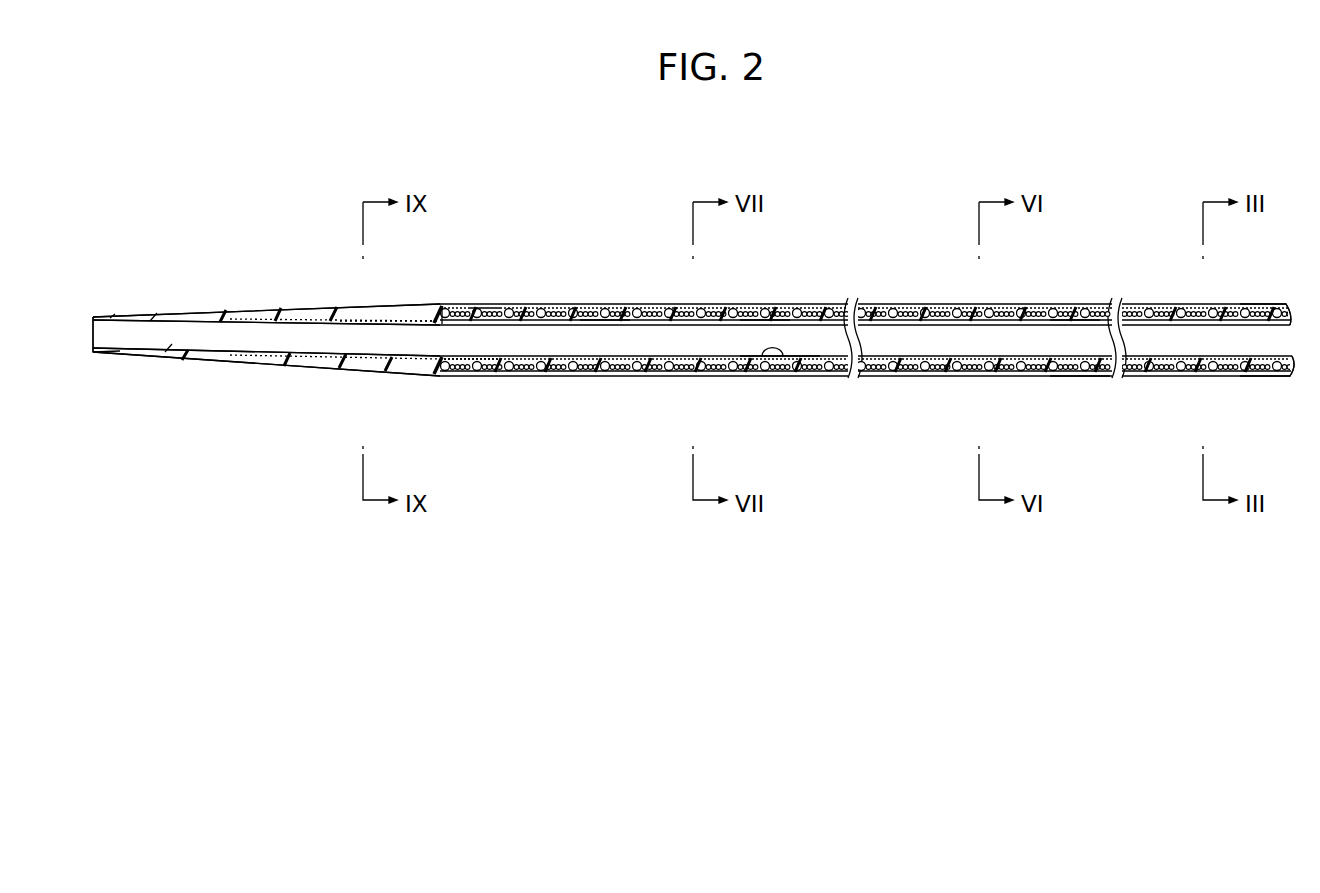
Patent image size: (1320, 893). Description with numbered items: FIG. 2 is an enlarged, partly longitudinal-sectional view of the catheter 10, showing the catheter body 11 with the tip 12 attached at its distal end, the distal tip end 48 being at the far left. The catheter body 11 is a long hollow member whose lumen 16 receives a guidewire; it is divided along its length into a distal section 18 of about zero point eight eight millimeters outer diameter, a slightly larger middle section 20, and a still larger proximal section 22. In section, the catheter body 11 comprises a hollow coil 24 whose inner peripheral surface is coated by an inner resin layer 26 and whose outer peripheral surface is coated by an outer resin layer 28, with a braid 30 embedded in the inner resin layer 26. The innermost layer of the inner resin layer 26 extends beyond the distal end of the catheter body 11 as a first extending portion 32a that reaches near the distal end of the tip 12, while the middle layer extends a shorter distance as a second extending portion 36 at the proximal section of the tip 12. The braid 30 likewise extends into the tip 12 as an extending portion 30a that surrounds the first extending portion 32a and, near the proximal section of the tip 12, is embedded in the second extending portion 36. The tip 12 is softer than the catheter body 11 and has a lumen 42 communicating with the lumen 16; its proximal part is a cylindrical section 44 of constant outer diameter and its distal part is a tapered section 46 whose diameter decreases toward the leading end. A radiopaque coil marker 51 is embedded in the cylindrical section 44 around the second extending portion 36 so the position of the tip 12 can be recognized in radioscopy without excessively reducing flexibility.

The catheter 10 is at (878, 157).
The catheter body 11 is at (814, 298).
The tip 12 is at (263, 378).
The lumen 16 is at (783, 358).
The distal section 18 is at (561, 384).
The middle section 20 is at (1078, 386).
The proximal section 22 is at (1276, 392).
The coil 24 is at (1273, 300).
The inner resin layer 26 is at (602, 312).
The outer resin layer 28 is at (1072, 312).
The braid 30 is at (760, 312).
The extending portion 30a is at (377, 318).
The first inner-layer extending portion 32a is at (312, 320).
The second inner-layer extending portion 36 is at (466, 362).
The lumen 42 is at (172, 323).
The cylindrical section 44 is at (483, 312).
The tapered section 46 is at (347, 362).
The distal tip 48 is at (93, 317).
The coil marker 51 is at (458, 312).